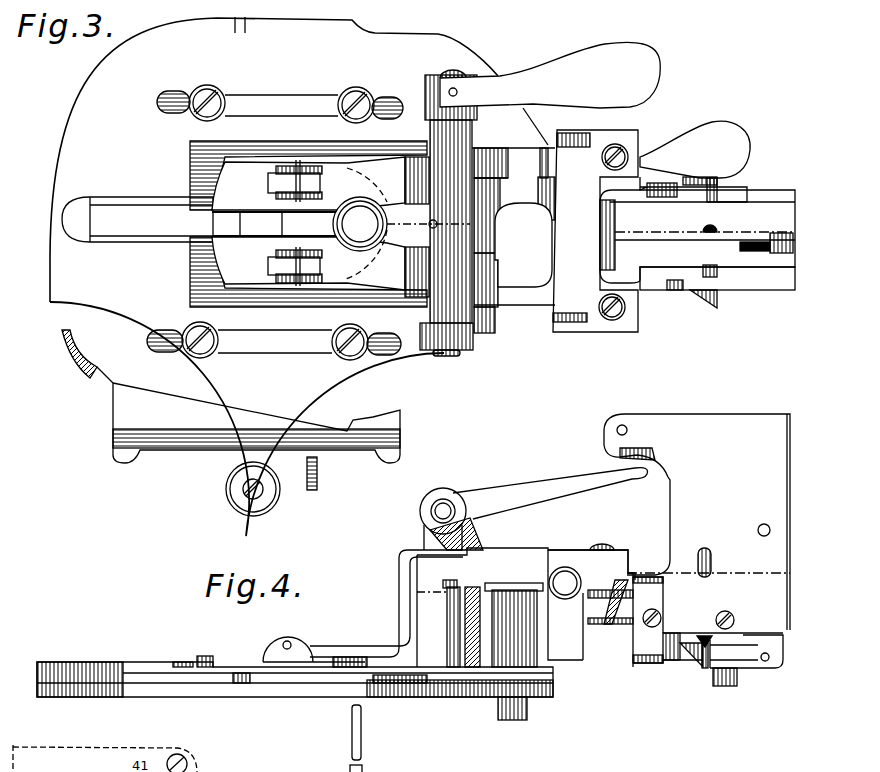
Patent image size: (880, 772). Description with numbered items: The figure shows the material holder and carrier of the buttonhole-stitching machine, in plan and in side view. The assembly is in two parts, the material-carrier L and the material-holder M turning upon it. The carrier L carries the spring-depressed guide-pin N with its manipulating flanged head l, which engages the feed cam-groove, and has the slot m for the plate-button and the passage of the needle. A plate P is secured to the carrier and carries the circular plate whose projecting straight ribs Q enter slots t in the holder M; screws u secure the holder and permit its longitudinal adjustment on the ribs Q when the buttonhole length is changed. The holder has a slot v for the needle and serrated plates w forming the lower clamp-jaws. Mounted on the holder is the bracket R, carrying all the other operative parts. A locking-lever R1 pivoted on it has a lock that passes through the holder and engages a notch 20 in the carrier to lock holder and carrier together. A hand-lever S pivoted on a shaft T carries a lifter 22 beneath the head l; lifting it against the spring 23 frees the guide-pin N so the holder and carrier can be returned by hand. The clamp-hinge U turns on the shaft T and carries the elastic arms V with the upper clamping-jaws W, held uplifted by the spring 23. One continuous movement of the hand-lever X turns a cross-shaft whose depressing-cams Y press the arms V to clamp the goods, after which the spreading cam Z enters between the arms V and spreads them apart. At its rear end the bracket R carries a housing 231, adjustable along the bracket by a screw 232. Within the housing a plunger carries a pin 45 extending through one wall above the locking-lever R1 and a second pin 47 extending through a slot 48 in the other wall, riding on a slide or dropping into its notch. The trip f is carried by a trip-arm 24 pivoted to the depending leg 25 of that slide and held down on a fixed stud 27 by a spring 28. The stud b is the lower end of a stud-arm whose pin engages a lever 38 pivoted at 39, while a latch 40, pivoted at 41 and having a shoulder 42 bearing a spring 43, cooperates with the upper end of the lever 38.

In FIG. 3, the plate P is at (85, 230).
In FIG. 4, the plate P is at (176, 680).
In FIG. 3, the slot m is at (253, 20).
In FIG. 3, the slot v is at (115, 248).
In FIG. 3, the material-holder M is at (279, 221).
In FIG. 4, the material-holder M is at (122, 665).
In FIG. 3, the slots t is at (175, 92).
In FIG. 3, the screws u is at (215, 97).
In FIG. 4, the screws u is at (180, 658).
In FIG. 3, the ribs Q is at (278, 223).
In FIG. 3, the serrated plates w is at (190, 170).
In FIG. 3, the upper clamping-jaws W is at (308, 223).
In FIG. 4, the upper clamping-jaws W is at (231, 660).
In FIG. 3, the elastic arms V is at (386, 227).
In FIG. 4, the elastic arms V is at (398, 612).
In FIG. 3, the bracket R is at (428, 125).
In FIG. 4, the bracket R is at (594, 617).
In FIG. 3, the hand-lever X is at (550, 75).
In FIG. 4, the hand-lever X is at (563, 488).
In FIG. 3, the depressing-cams Y is at (495, 155).
In FIG. 4, the depressing-cams Y is at (424, 535).
In FIG. 3, the spring 23 is at (540, 158).
In FIG. 3, the lifter 22 is at (533, 198).
In FIG. 3, the spreading cam Z is at (516, 220).
In FIG. 4, the spreading cam Z is at (467, 534).
In FIG. 3, the clamp-hinge U is at (595, 231).
In FIG. 4, the clamp-hinge U is at (580, 553).
In FIG. 3, the hand-lever S is at (695, 149).
In FIG. 4, the hand-lever S is at (614, 582).
In FIG. 3, the screw 232 is at (693, 177).
In FIG. 3, the pin 45 is at (718, 188).
In FIG. 3, the locking-lever R1 is at (740, 190).
In FIG. 4, the locking-lever R1 is at (653, 620).
In FIG. 3, the housing 231 is at (697, 240).
In FIG. 4, the housing 231 is at (697, 522).
In FIG. 3, the latch 40 is at (667, 233).
In FIG. 3, the lever 38 is at (778, 236).
In FIG. 3, the pin 47 is at (710, 268).
In FIG. 3, the trip f is at (715, 305).
In FIG. 4, the trip f is at (690, 665).
In FIG. 3, the material-carrier L is at (232, 489).
In FIG. 4, the material-carrier L is at (290, 692).
In FIG. 3, the guide-pin N is at (280, 496).
In FIG. 4, the guide-pin N is at (515, 720).
In FIG. 3, the notch 20 is at (318, 485).
In FIG. 4, the flanged head l is at (490, 588).
In FIG. 4, the shaft T is at (565, 583).
In FIG. 4, the pivot 41 is at (627, 430).
In FIG. 4, the spring 43 is at (652, 456).
In FIG. 4, the shoulder 42 is at (630, 456).
In FIG. 4, the pivot 39 is at (764, 524).
In FIG. 4, the slot 48 is at (711, 562).
In FIG. 4, the spring 28 is at (702, 634).
In FIG. 4, the trip-arm 24 is at (737, 642).
In FIG. 4, the depending leg 25 is at (768, 632).
In FIG. 4, the fixed stud 27 is at (712, 680).
In FIG. 4, the stud b is at (737, 688).